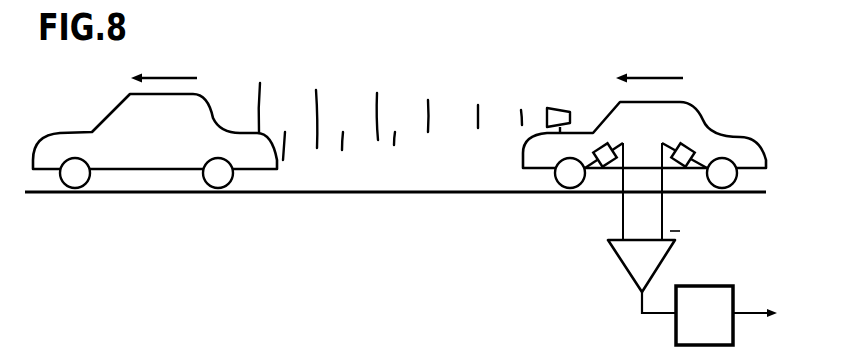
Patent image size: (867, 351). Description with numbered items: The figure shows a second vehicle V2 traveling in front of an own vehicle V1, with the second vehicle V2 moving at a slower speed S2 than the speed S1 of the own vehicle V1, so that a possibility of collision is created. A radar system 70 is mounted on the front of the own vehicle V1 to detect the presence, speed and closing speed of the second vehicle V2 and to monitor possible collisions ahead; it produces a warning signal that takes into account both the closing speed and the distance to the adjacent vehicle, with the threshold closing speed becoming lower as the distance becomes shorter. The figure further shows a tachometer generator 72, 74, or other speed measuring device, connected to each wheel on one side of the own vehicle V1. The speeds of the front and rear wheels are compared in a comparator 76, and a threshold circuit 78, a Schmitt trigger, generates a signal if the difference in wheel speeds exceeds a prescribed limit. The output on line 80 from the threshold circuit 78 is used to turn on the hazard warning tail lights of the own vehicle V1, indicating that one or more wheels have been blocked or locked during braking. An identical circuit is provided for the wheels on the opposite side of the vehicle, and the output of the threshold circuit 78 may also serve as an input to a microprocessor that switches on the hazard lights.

The radar system 70 is at (555, 106).
The tachometer generator 72 is at (603, 141).
The tachometer generator 74 is at (692, 141).
The comparator 76 is at (617, 259).
The threshold circuit 78 is at (722, 285).
The output line 80 is at (766, 298).
The own vehicle V1 is at (652, 165).
The second vehicle V2 is at (175, 140).
The speed of the first vehicle S1 is at (657, 73).
The speed of the second vehicle S2 is at (168, 60).